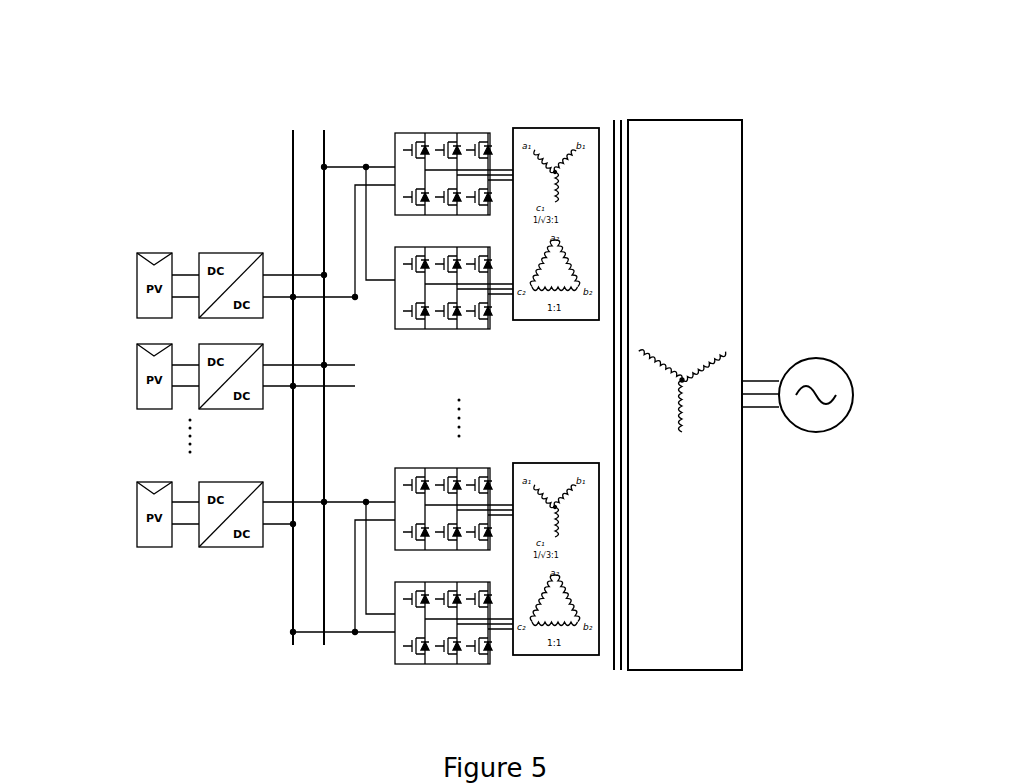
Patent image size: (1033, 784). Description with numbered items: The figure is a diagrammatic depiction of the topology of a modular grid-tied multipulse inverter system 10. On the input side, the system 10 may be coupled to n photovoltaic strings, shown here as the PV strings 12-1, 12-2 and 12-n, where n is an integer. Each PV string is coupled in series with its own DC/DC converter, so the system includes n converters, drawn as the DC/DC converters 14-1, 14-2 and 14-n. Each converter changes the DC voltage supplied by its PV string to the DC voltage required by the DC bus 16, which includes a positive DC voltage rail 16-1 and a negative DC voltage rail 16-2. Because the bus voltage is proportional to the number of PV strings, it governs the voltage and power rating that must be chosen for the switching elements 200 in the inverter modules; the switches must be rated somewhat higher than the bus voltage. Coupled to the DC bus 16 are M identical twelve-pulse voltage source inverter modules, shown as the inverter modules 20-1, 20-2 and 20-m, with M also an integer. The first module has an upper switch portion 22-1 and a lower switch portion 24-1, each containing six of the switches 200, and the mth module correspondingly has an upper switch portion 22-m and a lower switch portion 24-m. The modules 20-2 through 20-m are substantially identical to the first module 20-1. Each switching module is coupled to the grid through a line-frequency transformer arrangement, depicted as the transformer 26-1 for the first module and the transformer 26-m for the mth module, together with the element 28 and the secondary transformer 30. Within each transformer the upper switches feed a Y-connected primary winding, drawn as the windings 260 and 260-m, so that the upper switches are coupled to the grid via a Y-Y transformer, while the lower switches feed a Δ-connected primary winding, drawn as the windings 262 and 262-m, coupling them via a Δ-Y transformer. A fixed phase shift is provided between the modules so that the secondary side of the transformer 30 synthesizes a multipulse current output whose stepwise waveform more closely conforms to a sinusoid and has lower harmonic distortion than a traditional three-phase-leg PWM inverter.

The modular grid-tied multipulse inverter system 10 is at (98, 44).
The photovoltaic string 12-1 is at (137, 300).
The photovoltaic string 12-2 is at (137, 392).
The photovoltaic string 12-n is at (140, 535).
The DC/DC converter 14-1 is at (256, 254).
The DC/DC converter 14-2 is at (256, 344).
The DC/DC converter 14-n is at (256, 482).
The DC bus 16 is at (273, 368).
The positive DC voltage rail 16-1 is at (323, 154).
The negative DC voltage rail 16-2 is at (293, 183).
The voltage source inverter module 20-1 is at (352, 113).
The voltage source inverter module 20-2 is at (487, 375).
The voltage source inverter module 20-m is at (348, 452).
The upper switch portion 22-1 is at (410, 128).
The upper switch portion 22-m is at (443, 468).
The lower switch portion 24-1 is at (400, 252).
The lower switch portion 24-m is at (400, 665).
The switching element 200 is at (435, 135).
The line-frequency transformer 26-1 is at (522, 126).
The line-frequency transformer 26-m is at (592, 655).
The wye winding 260 is at (557, 142).
The wye winding of module m 260-m is at (545, 470).
The delta winding 262 is at (568, 256).
The delta winding of module m 262-m is at (545, 625).
The line-frequency transformer 28 is at (620, 118).
The secondary transformer 30 is at (695, 125).